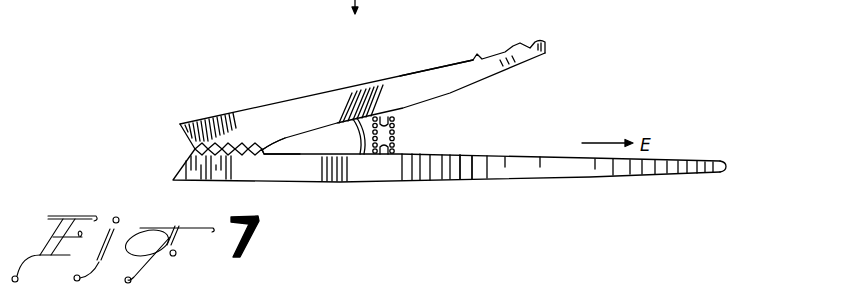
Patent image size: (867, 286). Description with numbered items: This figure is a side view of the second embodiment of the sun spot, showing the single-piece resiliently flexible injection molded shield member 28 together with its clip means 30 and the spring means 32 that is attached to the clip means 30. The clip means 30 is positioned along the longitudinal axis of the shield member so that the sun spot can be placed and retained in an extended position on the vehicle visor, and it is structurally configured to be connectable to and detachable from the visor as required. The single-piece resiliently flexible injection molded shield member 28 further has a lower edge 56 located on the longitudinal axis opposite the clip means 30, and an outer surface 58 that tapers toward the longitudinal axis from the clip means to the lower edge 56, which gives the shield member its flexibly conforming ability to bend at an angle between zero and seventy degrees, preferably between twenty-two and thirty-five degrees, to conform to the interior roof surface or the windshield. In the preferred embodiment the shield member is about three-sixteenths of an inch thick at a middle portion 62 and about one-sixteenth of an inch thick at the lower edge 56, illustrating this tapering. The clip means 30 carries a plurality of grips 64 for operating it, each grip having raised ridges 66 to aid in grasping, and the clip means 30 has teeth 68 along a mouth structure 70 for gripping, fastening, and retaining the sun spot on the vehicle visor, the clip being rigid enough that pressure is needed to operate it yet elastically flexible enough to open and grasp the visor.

The single-piece resiliently flexible injection molded shield member 28 is at (506, 151).
The clip means 30 is at (318, 88).
The spring means 32 is at (397, 131).
The lower edge 56 is at (728, 166).
The outer surface 58 is at (469, 154).
The middle portion 62 is at (541, 168).
The grips 64 is at (428, 77).
The raised ridges 66 is at (520, 45).
The teeth 68 is at (206, 147).
The mouth structure 70 is at (297, 143).